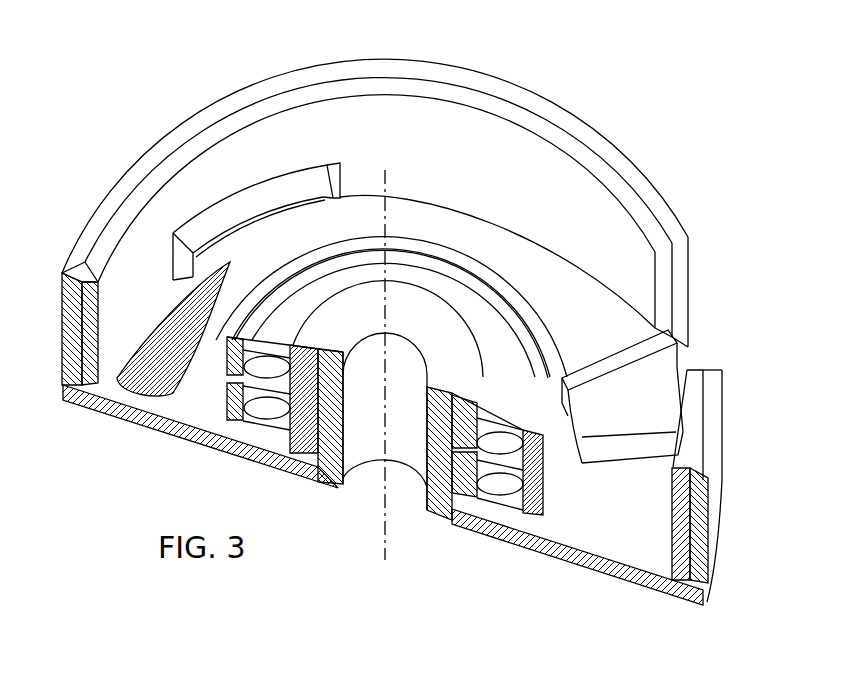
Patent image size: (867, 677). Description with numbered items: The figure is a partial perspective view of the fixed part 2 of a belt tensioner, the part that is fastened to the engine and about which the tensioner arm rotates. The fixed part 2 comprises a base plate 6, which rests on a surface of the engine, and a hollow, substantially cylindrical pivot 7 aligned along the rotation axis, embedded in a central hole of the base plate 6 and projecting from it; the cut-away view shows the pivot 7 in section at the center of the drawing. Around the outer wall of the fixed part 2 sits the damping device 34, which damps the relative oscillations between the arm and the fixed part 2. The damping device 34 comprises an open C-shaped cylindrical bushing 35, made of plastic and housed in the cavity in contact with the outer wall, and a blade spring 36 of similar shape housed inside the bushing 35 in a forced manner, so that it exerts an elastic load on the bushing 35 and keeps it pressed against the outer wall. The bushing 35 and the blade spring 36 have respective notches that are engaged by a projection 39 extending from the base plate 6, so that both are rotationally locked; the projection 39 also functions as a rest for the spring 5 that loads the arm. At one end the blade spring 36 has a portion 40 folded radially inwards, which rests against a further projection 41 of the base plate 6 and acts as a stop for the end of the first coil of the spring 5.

The fixed part 2 is at (528, 548).
The spring 5 is at (557, 287).
The base plate 6 is at (197, 403).
The pivot 7 is at (358, 458).
The damping device 34 is at (727, 487).
The bushing 35 is at (713, 396).
The blade spring 36 is at (692, 376).
The projection 39 is at (235, 208).
The portion folded radially inwards 40 is at (610, 362).
The further projection 41 is at (622, 430).